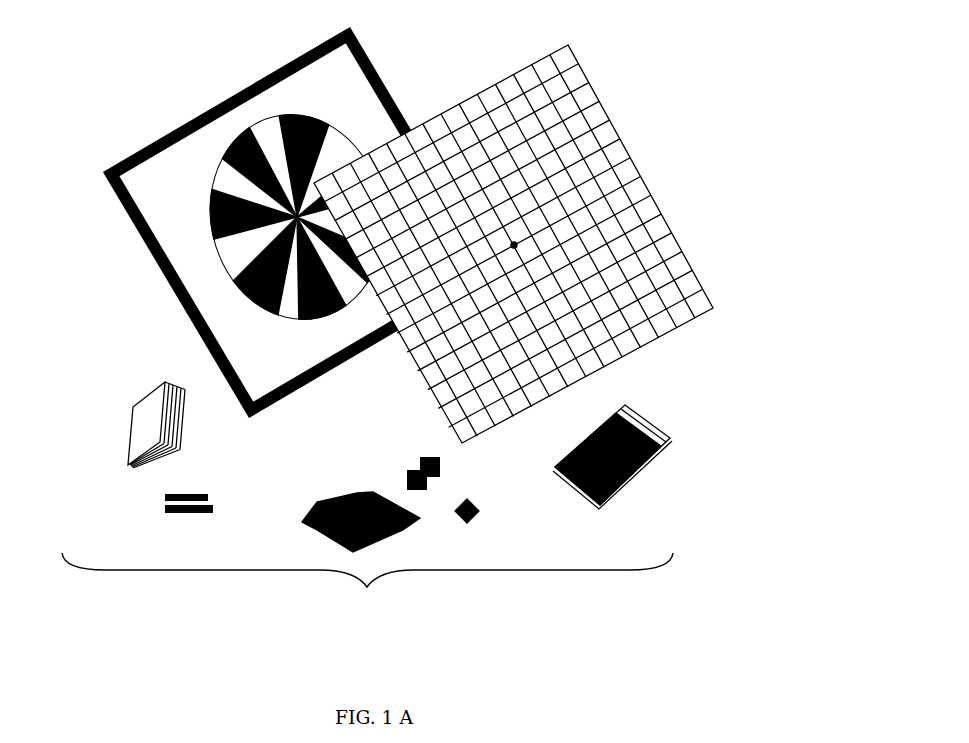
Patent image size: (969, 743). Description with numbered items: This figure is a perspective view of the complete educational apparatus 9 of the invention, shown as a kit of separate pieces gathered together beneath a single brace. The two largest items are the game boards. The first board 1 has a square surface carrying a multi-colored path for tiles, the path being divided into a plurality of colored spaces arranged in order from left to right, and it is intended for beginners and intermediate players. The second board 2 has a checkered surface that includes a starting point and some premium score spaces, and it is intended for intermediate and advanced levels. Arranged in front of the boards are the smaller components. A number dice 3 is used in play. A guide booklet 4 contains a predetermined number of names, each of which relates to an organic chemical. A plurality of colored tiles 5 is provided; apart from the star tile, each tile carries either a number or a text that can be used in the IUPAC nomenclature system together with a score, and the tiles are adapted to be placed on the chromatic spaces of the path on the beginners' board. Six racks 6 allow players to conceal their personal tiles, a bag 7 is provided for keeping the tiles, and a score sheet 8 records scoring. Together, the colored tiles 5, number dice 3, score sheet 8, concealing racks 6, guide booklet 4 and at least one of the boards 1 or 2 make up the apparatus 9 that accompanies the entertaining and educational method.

The first board 1 is at (168, 322).
The second board 2 is at (610, 103).
The number dice 3 is at (483, 520).
The guide booklet 4 is at (130, 427).
The colored tiles 5 is at (407, 458).
The racks 6 is at (163, 505).
The bag 7 is at (333, 498).
The score sheet 8 is at (650, 473).
The apparatus 9 is at (367, 588).